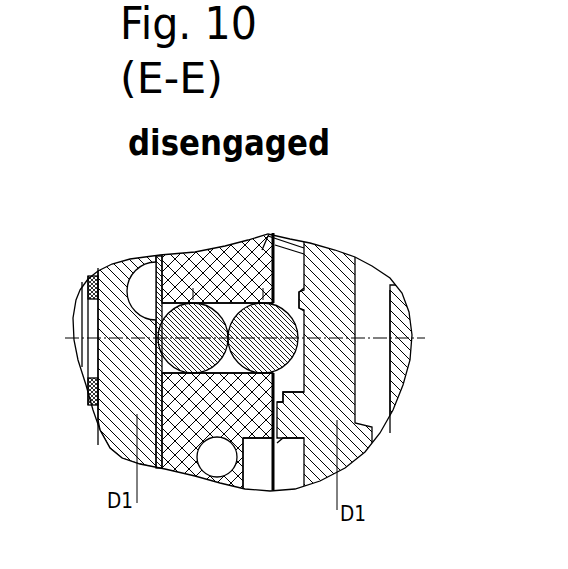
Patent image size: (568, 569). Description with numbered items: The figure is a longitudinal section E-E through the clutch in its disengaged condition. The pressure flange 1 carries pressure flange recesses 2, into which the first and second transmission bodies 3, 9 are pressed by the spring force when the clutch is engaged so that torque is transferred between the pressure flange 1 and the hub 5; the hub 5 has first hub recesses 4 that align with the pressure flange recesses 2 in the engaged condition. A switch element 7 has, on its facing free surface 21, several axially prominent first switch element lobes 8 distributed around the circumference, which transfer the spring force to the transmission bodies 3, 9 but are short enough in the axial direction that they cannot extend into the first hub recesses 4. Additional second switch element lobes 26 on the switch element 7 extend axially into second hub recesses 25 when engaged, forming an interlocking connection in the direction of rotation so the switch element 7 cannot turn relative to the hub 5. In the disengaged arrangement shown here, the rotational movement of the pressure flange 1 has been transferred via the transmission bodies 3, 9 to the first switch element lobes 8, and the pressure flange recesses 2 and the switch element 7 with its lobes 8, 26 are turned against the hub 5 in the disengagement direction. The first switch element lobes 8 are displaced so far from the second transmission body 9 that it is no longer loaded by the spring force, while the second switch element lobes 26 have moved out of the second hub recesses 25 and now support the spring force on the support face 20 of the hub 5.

The pressure flange 1 is at (100, 353).
The pressure flange recesses 2 is at (97, 293).
The first transmission body 3 is at (103, 267).
The first hub recesses 4 is at (155, 258).
The hub 5 is at (227, 253).
The switch element 7 is at (343, 300).
The first switch element lobes 8 is at (303, 288).
The second transmission body 9 is at (160, 300).
The support face 20 is at (280, 249).
The free surface 21 is at (304, 274).
The second hub recesses 25 is at (253, 466).
The second switch element lobes 26 is at (288, 418).